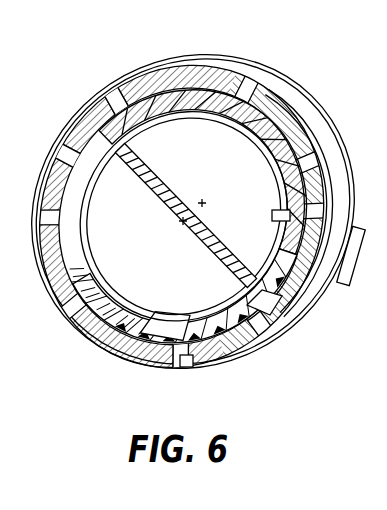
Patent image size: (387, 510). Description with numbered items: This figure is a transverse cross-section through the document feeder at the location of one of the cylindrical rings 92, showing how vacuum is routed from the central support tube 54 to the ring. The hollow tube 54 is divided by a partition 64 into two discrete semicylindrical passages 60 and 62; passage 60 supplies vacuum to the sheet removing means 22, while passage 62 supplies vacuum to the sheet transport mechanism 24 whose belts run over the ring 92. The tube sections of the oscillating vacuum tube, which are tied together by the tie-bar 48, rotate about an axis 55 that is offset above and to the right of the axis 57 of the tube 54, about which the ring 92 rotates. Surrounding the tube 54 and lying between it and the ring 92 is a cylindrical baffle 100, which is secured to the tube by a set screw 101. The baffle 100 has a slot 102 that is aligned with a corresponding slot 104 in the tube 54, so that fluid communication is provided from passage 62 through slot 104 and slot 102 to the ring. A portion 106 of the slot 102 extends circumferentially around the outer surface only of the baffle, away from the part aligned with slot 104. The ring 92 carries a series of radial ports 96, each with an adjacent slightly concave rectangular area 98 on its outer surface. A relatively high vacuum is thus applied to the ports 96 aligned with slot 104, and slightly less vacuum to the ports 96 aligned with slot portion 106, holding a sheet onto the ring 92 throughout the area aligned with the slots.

The sheet removing means 22 is at (211, 55).
The sheet transport mechanism 24 is at (73, 336).
The tie-bar 48 is at (345, 290).
The central support tube 54 is at (214, 117).
The axis of tube sections 55 is at (201, 201).
The axis of tube 57 is at (182, 221).
The passage 60 is at (252, 194).
The passage 62 is at (159, 274).
The partition 64 is at (127, 170).
The cylindrical ring 92 is at (273, 325).
The port 96 is at (112, 99).
The rectangular area 98 is at (172, 362).
The cylindrical baffle 100 is at (297, 318).
The set screw 101 is at (273, 221).
The slot 102 is at (74, 252).
The slot 104 is at (86, 212).
The slot portion 106 is at (152, 310).